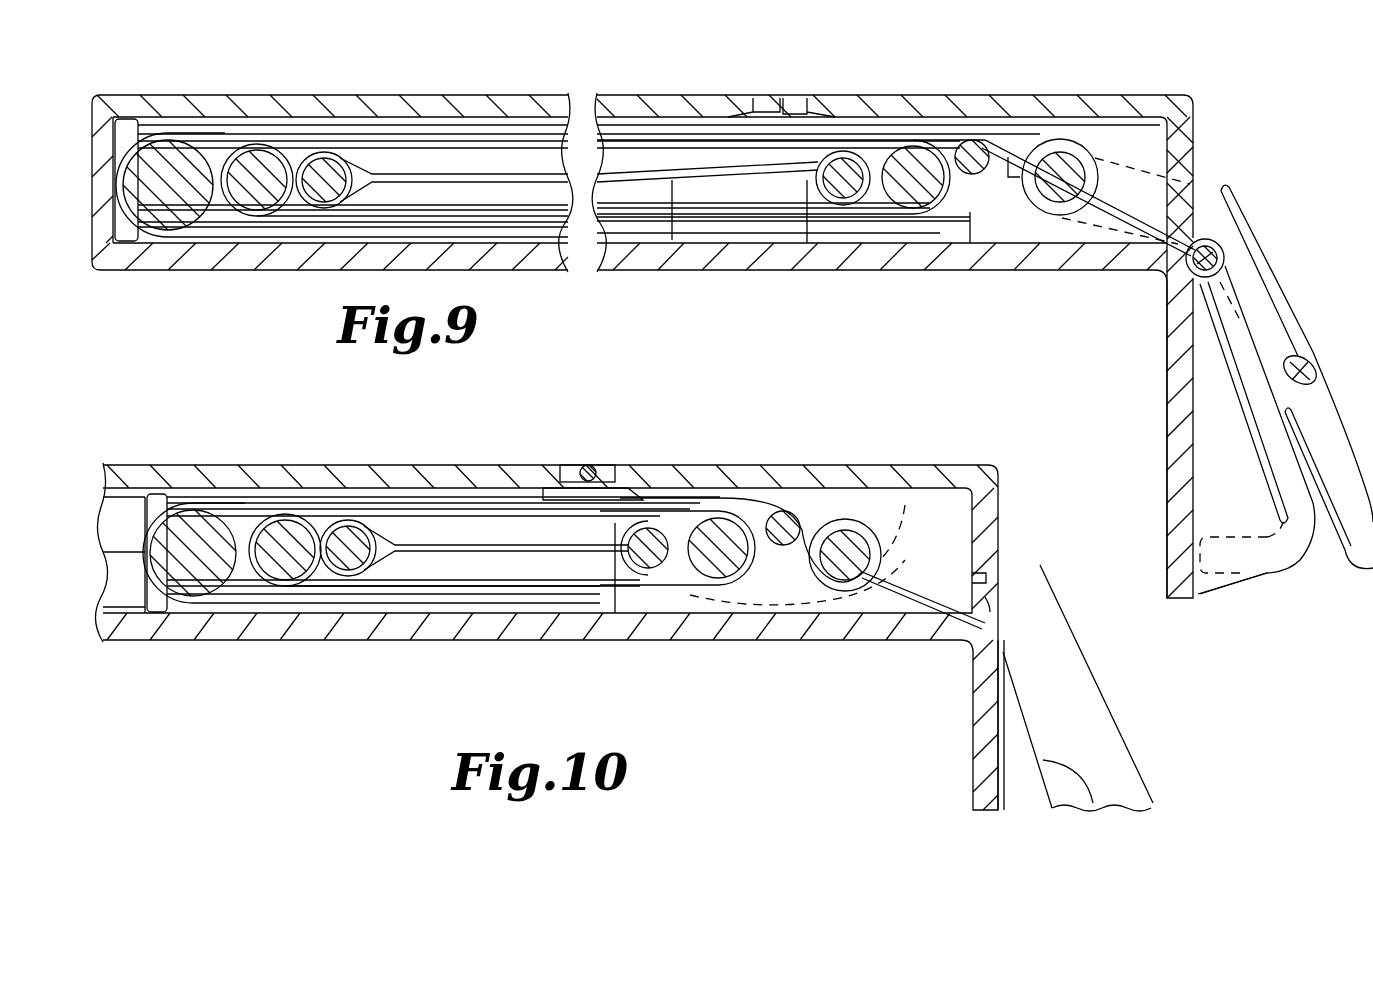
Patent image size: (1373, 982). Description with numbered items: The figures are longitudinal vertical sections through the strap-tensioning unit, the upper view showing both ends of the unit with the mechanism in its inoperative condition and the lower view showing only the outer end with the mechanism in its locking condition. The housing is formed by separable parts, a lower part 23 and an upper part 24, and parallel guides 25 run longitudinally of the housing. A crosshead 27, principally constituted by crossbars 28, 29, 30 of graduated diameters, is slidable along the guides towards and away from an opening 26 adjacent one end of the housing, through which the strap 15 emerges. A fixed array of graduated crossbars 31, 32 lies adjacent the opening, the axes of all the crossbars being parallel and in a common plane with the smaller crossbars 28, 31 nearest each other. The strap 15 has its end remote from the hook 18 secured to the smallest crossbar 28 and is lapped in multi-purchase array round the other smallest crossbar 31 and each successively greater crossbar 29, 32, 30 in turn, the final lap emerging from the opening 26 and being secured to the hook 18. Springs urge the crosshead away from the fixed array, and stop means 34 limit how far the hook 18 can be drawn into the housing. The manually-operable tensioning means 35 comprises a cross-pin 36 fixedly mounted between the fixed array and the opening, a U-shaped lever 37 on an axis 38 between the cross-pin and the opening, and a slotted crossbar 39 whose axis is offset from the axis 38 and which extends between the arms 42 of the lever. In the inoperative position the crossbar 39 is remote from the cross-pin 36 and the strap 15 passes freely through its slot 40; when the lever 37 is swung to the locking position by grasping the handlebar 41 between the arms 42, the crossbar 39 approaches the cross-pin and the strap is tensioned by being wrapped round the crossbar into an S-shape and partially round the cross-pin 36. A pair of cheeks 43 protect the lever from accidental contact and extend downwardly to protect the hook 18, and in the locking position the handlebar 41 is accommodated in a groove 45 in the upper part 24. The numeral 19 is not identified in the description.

In FIG. 9, the strap 15 is at (467, 172).
In FIG. 10, the strap 15 is at (453, 540).
In FIG. 9, the hook 18 is at (1247, 297).
In FIG. 10, the hook 18 is at (1001, 725).
In FIG. 9, the recess 19 is at (1220, 568).
In FIG. 9, the lower part 23 is at (618, 261).
In FIG. 10, the lower part 23 is at (142, 630).
In FIG. 9, the upper part 24 is at (603, 98).
In FIG. 10, the upper part 24 is at (127, 472).
In FIG. 9, the parallel guides 25 is at (632, 190).
In FIG. 10, the parallel guides 25 is at (450, 563).
In FIG. 9, the opening 26 is at (1200, 216).
In FIG. 10, the opening 26 is at (997, 597).
In FIG. 9, the crosshead 27 is at (172, 245).
In FIG. 10, the crosshead 27 is at (323, 608).
In FIG. 9, the crossbar 28 is at (327, 167).
In FIG. 10, the crossbar 28 is at (347, 543).
In FIG. 9, the crossbar 29 is at (255, 170).
In FIG. 10, the crossbar 29 is at (283, 543).
In FIG. 9, the crossbar 30 is at (168, 167).
In FIG. 10, the crossbar 30 is at (195, 532).
In FIG. 9, the crossbar 31 is at (838, 173).
In FIG. 10, the crossbar 31 is at (643, 560).
In FIG. 9, the crossbar 32 is at (910, 167).
In FIG. 10, the crossbar 32 is at (713, 567).
In FIG. 9, the stop means 34 is at (1247, 520).
In FIG. 9, the manually-operable tensioning means 35 is at (1038, 134).
In FIG. 10, the manually-operable tensioning means 35 is at (816, 514).
In FIG. 9, the cross-pin 36 is at (973, 155).
In FIG. 10, the cross-pin 36 is at (785, 513).
In FIG. 9, the U-shaped lever 37 is at (1252, 218).
In FIG. 10, the U-shaped lever 37 is at (753, 603).
In FIG. 9, the axis 38 is at (1045, 163).
In FIG. 10, the axis 38 is at (905, 505).
In FIG. 9, the slotted crossbar 39 is at (1067, 170).
In FIG. 10, the slotted crossbar 39 is at (867, 543).
In FIG. 9, the slot 40 is at (1077, 190).
In FIG. 10, the slot 40 is at (847, 563).
In FIG. 9, the handlebar 41 is at (1303, 362).
In FIG. 10, the handlebar 41 is at (597, 472).
In FIG. 9, the arms 42 is at (1272, 320).
In FIG. 9, the cheeks 43 is at (1357, 549).
In FIG. 10, the cheeks 43 is at (1048, 645).
In FIG. 9, the groove 45 is at (782, 111).
In FIG. 10, the groove 45 is at (580, 473).